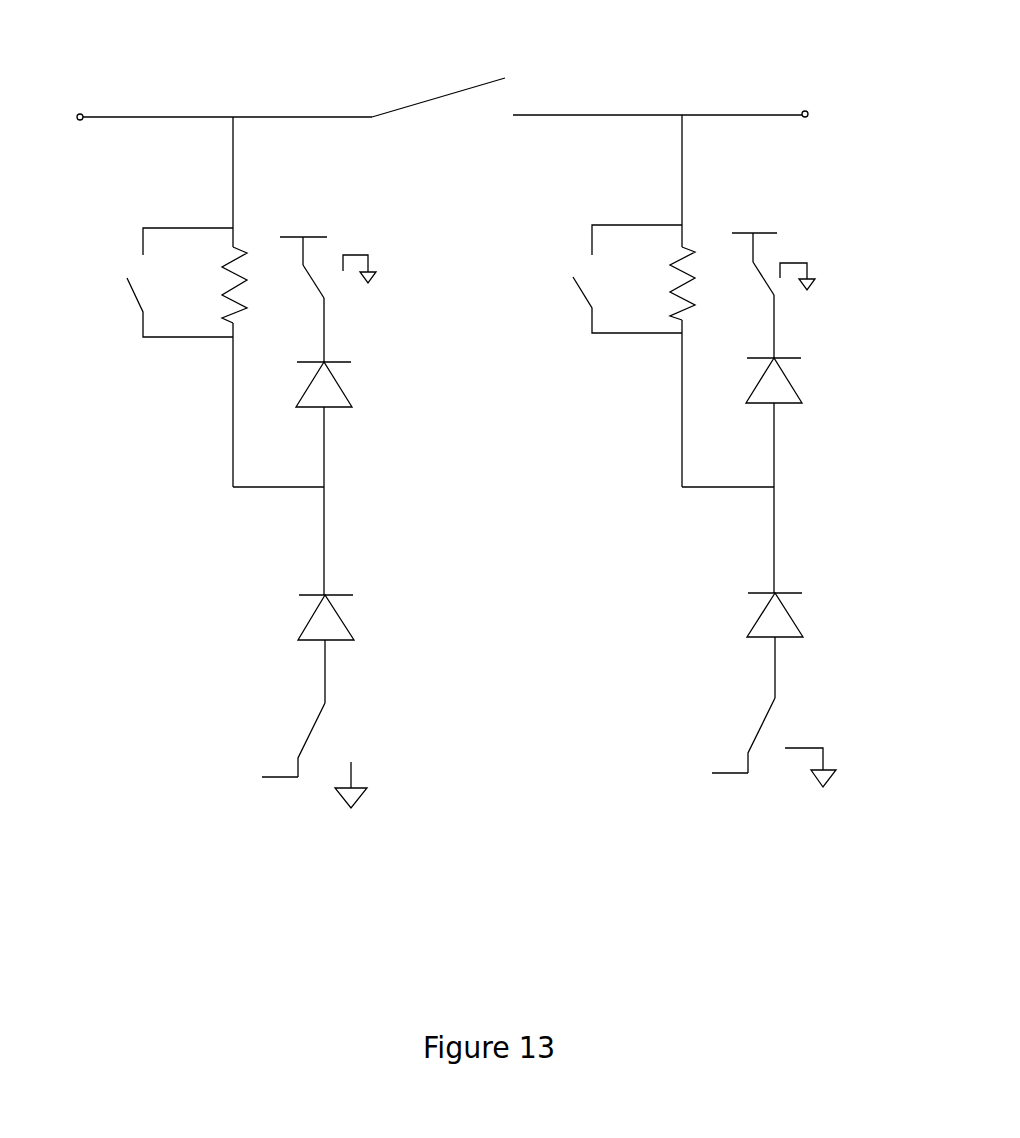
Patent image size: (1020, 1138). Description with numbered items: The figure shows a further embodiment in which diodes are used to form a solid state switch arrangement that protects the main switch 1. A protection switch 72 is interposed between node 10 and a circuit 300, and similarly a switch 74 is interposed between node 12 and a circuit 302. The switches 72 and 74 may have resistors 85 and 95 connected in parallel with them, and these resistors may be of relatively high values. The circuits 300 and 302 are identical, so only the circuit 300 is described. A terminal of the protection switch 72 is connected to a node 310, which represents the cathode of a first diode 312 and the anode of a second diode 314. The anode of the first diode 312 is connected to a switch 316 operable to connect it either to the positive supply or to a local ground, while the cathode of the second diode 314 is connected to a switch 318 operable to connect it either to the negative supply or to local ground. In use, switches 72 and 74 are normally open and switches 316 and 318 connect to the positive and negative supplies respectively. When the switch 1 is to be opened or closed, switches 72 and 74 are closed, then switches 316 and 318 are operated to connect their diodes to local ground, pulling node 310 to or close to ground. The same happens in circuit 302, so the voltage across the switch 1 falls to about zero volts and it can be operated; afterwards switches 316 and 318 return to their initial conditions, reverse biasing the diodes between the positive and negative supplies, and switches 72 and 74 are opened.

The switch 1 is at (463, 75).
The node 10 is at (78, 121).
The node 12 is at (814, 112).
The protection switch 72 is at (123, 312).
The switch 74 is at (569, 300).
The resistor 85 is at (248, 262).
The resistor 95 is at (696, 262).
The circuit 300 is at (260, 850).
The circuit 302 is at (695, 850).
The node 310 is at (328, 487).
The first diode 312 is at (338, 375).
The second diode 314 is at (348, 618).
The switch 316 is at (328, 298).
The switch 318 is at (323, 738).